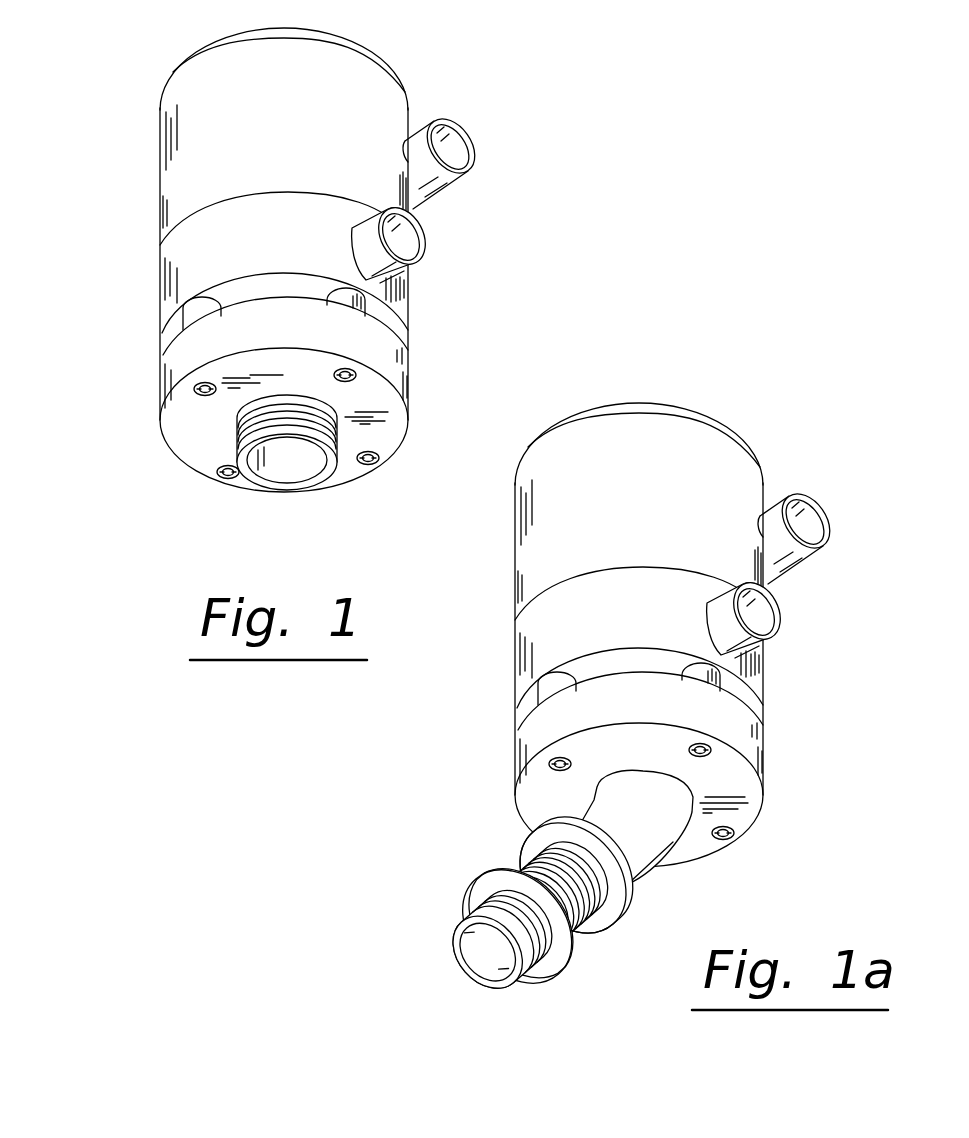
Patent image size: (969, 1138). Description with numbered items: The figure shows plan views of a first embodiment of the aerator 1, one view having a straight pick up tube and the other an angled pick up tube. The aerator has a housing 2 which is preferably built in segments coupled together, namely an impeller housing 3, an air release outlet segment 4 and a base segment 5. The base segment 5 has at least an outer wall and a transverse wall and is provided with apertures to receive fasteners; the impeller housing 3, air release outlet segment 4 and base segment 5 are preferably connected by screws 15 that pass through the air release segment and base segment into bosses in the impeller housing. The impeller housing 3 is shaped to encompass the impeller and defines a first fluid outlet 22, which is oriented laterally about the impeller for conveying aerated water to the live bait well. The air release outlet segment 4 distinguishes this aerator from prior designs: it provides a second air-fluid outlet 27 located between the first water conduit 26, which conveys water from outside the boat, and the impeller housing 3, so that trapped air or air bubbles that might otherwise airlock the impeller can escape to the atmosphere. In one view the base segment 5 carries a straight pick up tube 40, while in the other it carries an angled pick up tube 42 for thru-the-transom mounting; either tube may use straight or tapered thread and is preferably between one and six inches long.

In FIG. 1, the aerator 1 is at (288, 276).
In FIG. 1, the housing 2 is at (103, 85).
In FIG. 1, the impeller housing 3 is at (385, 127).
In FIG. 1, the air release outlet segment 4 is at (413, 319).
In FIG. 1, the base segment 5 is at (412, 381).
In FIG. 1A, the base segment 5 is at (765, 757).
In FIG. 1, the screws 15 is at (224, 470).
In FIG. 1, the first fluid outlet 22 is at (458, 153).
In FIG. 1, the first water conduit 26 is at (333, 427).
In FIG. 1, the second air-fluid outlet 27 is at (414, 244).
In FIG. 1, the straight pick up tube 40 is at (336, 472).
In FIG. 1A, the angled pick up tube 42 is at (577, 935).